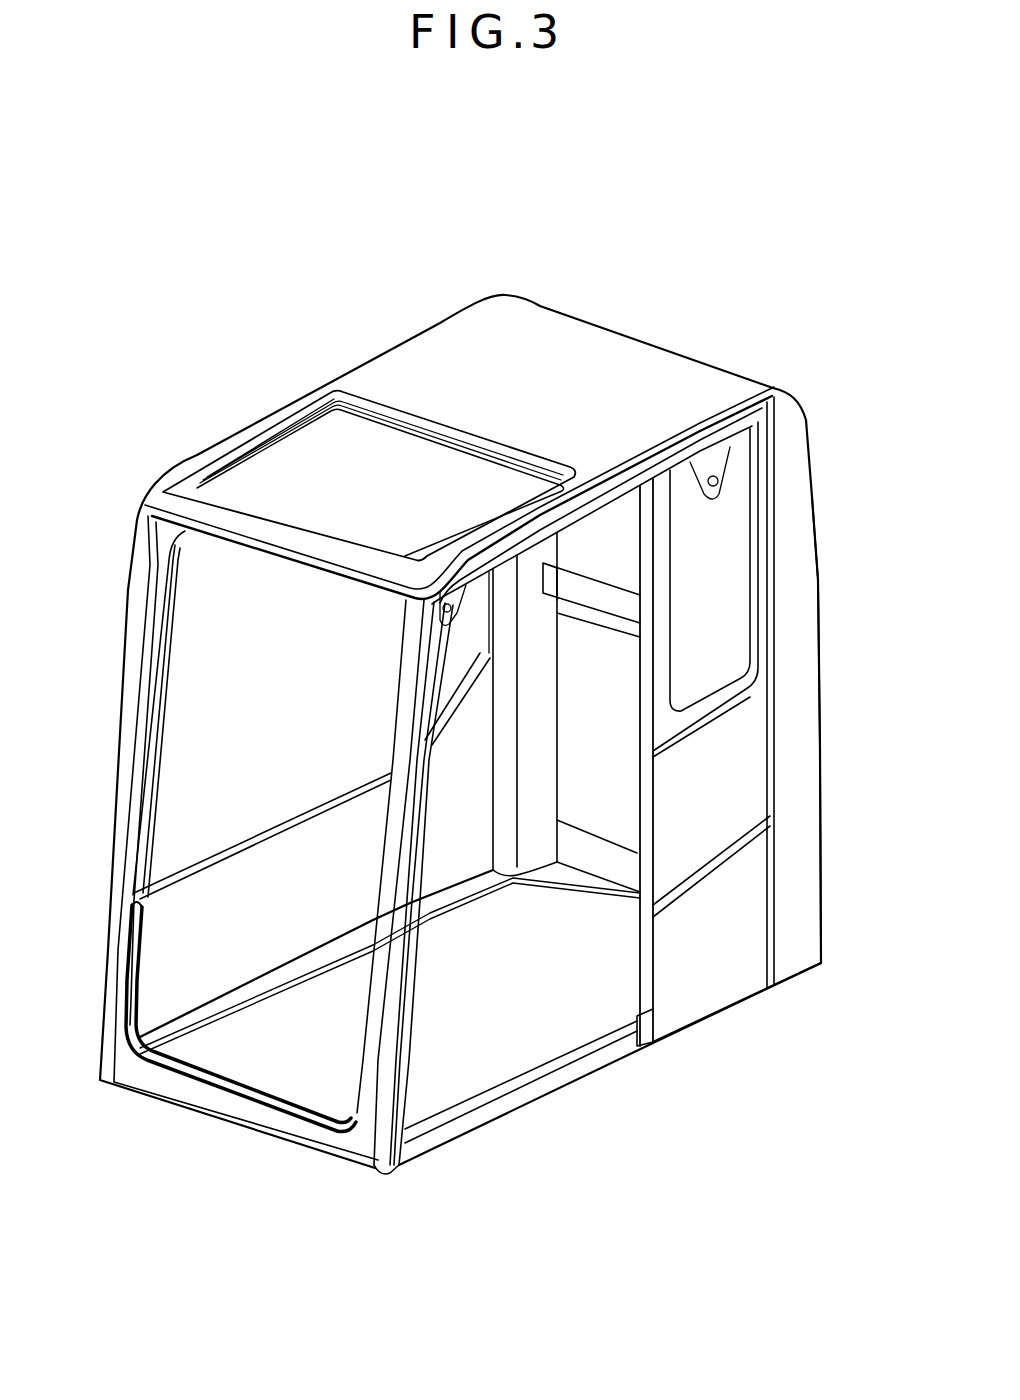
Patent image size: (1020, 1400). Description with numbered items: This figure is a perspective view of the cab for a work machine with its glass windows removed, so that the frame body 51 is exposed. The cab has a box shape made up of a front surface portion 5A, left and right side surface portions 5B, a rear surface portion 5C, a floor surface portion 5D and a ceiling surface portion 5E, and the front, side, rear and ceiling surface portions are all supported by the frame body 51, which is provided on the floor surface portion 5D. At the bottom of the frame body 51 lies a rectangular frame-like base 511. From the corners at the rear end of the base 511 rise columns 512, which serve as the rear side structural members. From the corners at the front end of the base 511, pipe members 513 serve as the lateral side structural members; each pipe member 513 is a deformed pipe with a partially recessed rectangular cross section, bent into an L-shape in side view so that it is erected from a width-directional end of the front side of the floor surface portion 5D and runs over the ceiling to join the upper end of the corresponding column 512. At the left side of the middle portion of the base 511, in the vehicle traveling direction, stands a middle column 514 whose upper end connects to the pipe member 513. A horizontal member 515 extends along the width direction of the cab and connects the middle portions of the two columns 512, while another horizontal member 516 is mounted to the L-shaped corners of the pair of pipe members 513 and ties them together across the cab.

The front surface portion 5A is at (218, 1103).
The side surface portion 5B is at (250, 920).
The rear surface portion 5C is at (612, 822).
The floor surface portion 5D is at (450, 1073).
The ceiling surface portion 5E is at (440, 357).
The frame body 51 is at (798, 955).
The base 511 is at (453, 893).
The column 512 is at (537, 860).
The pipe member 513 is at (150, 688).
The middle column 514 is at (640, 730).
The horizontal member 515 is at (603, 607).
The horizontal member 516 is at (290, 560).